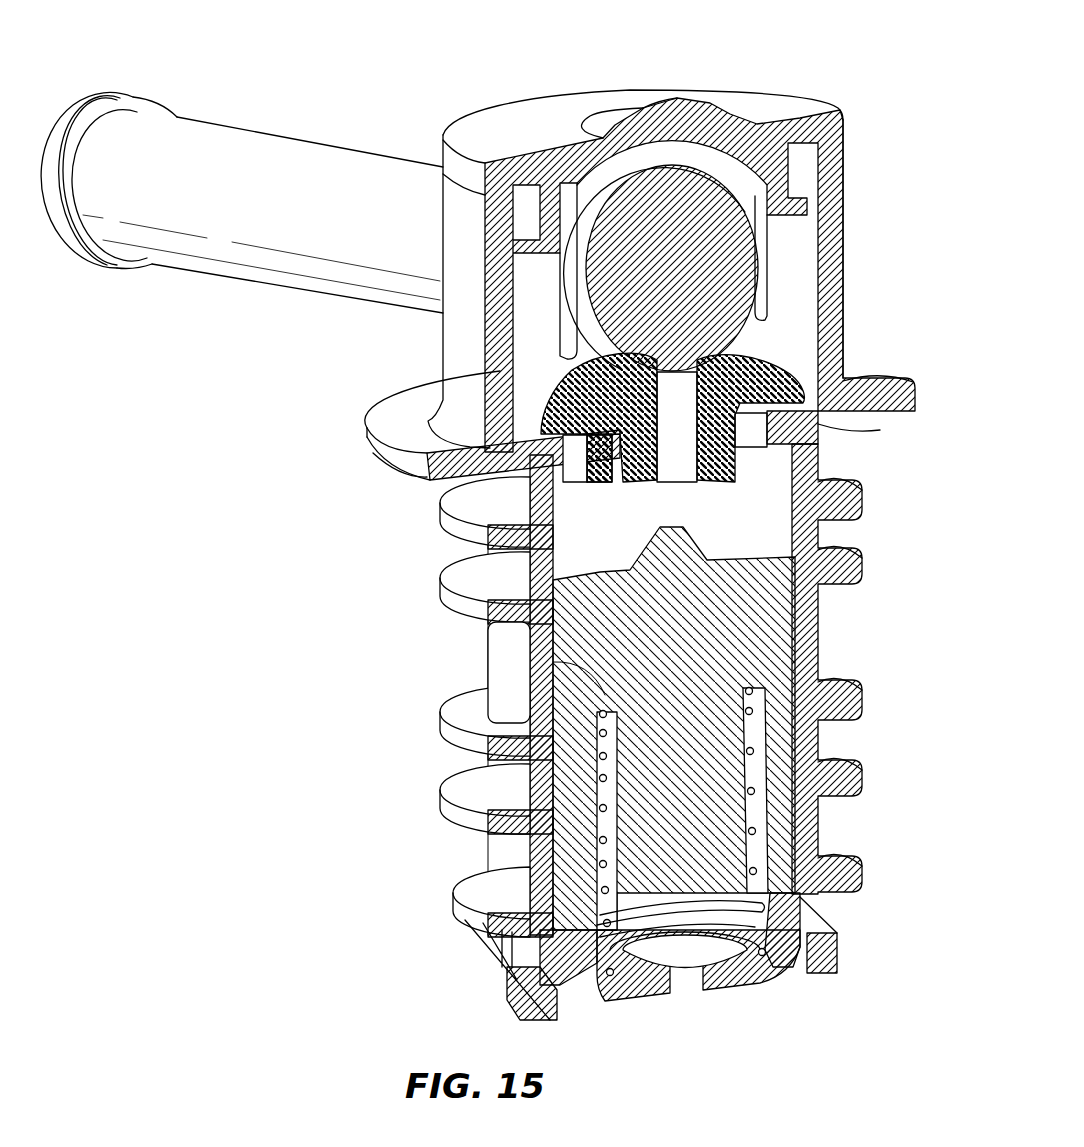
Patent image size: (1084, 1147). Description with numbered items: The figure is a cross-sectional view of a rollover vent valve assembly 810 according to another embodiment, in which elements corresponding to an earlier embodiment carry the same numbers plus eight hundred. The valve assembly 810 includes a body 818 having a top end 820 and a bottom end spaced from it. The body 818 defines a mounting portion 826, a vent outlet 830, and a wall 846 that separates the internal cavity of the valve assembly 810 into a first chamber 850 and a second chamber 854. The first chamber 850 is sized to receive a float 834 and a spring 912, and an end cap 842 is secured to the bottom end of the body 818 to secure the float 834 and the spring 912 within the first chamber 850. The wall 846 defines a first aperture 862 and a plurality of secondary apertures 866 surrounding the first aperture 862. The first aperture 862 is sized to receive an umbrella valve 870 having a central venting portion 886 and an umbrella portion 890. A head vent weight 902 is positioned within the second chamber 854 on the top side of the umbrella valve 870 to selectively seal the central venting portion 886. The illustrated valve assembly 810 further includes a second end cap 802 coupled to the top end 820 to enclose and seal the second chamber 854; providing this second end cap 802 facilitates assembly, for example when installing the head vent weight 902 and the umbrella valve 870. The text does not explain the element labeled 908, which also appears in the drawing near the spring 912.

The rollover vent valve assembly 810 is at (455, 70).
The top end 820 is at (722, 84).
The second end cap 802 is at (757, 130).
The body 818 is at (830, 230).
The second chamber 854 is at (786, 302).
The umbrella valve 870 is at (774, 360).
The wall 846 is at (880, 378).
The secondary apertures 866 is at (835, 418).
The first chamber 850 is at (756, 493).
The head vent weight 902 is at (627, 280).
The spring 912 is at (765, 758).
The biasing member 908 is at (756, 805).
The end cap 842 is at (792, 985).
The vent outlet 830 is at (225, 257).
The mounting portion 826 is at (372, 420).
The umbrella portion 890 is at (600, 437).
The first aperture 862 is at (598, 468).
The central venting portion 886 is at (560, 568).
The float 834 is at (572, 706).